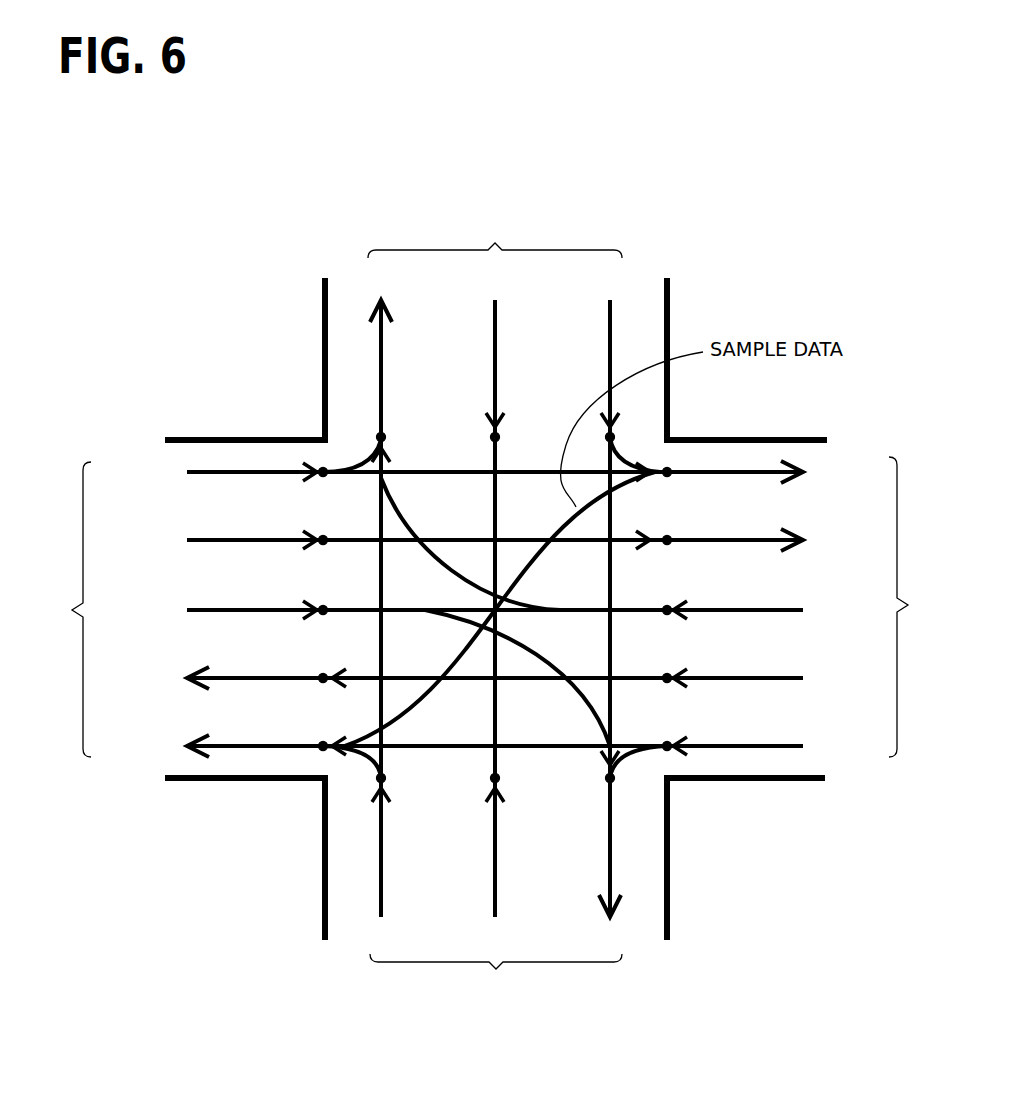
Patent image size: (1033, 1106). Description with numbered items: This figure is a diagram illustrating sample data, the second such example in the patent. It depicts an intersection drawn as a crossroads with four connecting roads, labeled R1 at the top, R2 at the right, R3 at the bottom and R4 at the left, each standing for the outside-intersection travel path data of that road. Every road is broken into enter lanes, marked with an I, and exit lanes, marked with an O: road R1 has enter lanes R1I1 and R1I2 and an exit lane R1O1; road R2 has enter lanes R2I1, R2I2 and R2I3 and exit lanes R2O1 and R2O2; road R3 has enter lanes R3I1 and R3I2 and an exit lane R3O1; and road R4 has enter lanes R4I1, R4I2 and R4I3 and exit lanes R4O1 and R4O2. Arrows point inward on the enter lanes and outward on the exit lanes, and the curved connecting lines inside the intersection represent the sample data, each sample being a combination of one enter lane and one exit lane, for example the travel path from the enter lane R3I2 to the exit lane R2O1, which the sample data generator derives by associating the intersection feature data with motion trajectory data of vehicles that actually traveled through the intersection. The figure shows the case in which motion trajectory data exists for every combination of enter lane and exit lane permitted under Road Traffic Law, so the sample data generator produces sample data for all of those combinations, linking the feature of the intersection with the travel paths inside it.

The router R1 is at (495, 236).
The router R2 is at (918, 607).
The router R3 is at (496, 982).
The router R4 is at (60, 609).
The output port 1 of router R1 R1O1 is at (382, 366).
The input port 2 of router R1 R1I2 is at (496, 356).
The input port 1 of router R1 R1I1 is at (608, 356).
The exit lane of outside-intersection travel path data R2O1 is at (760, 473).
The output port 2 of router R2 R2O2 is at (760, 541).
The input port 3 of router R2 R2I3 is at (768, 611).
The input port 2 of router R2 R2I2 is at (768, 679).
The input port 1 of router R2 R2I1 is at (767, 747).
The input port 1 of router R3 R3I1 is at (382, 861).
The enter lane of outside-intersection travel path data R3I2 is at (496, 861).
The output port 1 of router R3 R3O1 is at (607, 849).
The input port 1 of router R4 R4I1 is at (221, 475).
The input port 2 of router R4 R4I2 is at (221, 543).
The input port 3 of router R4 R4I3 is at (221, 613).
The output port 2 of router R4 R4O2 is at (223, 680).
The output port 1 of router R4 R4O1 is at (223, 748).